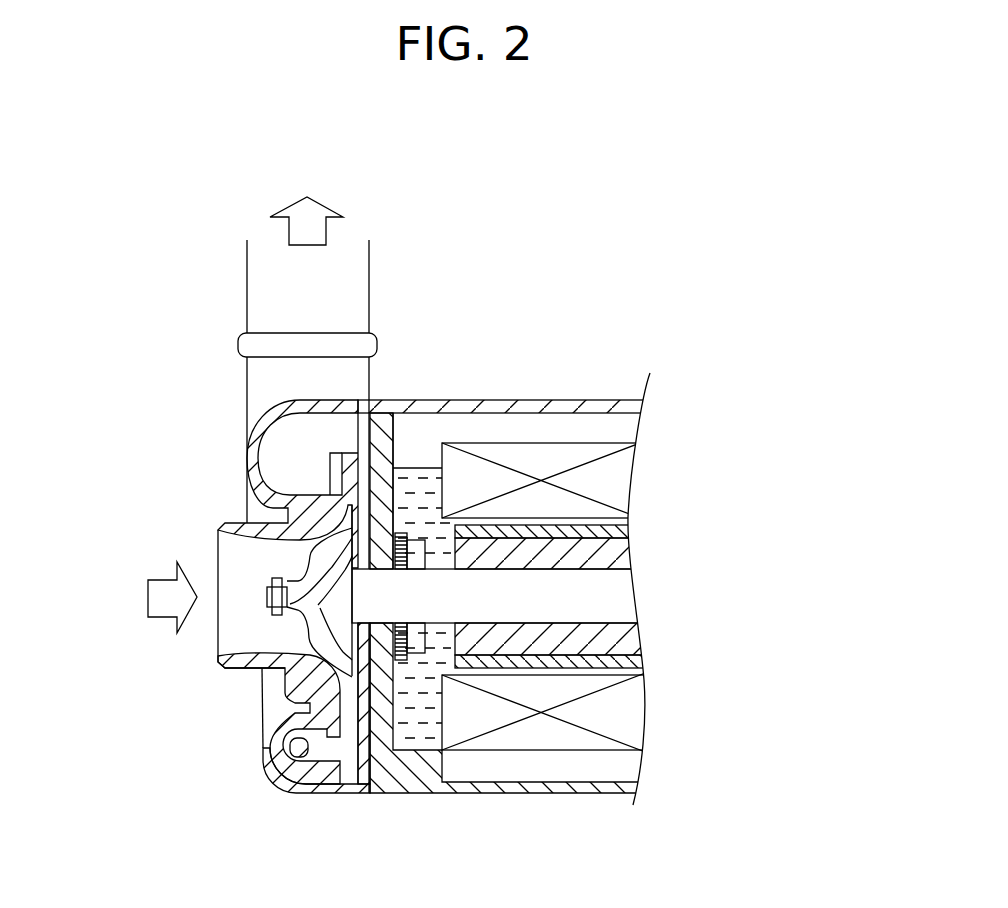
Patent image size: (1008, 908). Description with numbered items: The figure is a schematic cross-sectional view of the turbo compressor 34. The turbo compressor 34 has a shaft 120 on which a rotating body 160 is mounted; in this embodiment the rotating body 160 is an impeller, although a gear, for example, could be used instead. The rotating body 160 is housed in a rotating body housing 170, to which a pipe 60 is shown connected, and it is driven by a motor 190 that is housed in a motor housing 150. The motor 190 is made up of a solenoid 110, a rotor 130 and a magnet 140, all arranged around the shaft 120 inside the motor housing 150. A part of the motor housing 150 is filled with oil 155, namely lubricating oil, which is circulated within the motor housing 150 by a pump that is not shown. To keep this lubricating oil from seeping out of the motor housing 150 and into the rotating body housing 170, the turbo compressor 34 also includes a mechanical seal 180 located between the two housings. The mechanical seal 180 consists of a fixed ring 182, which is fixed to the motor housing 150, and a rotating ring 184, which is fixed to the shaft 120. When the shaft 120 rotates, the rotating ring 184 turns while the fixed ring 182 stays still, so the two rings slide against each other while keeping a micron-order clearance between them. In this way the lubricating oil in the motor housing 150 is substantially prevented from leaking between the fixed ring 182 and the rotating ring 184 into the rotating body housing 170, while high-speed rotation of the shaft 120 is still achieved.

The turbo compressor 34 is at (514, 277).
The oxygen discharge pipe 60 is at (245, 288).
The solenoid 110 is at (636, 480).
The shaft 120 is at (618, 600).
The rotor 130 is at (636, 553).
The magnet 140 is at (636, 533).
The motor housing 150 is at (650, 400).
The oil 155 is at (433, 731).
The rotating body 160 is at (300, 620).
The rotating body housing 170 is at (324, 793).
The mechanical seal 180 is at (468, 836).
The fixed ring 182 is at (405, 662).
The rotating ring 184 is at (416, 656).
The motor 190 is at (817, 440).